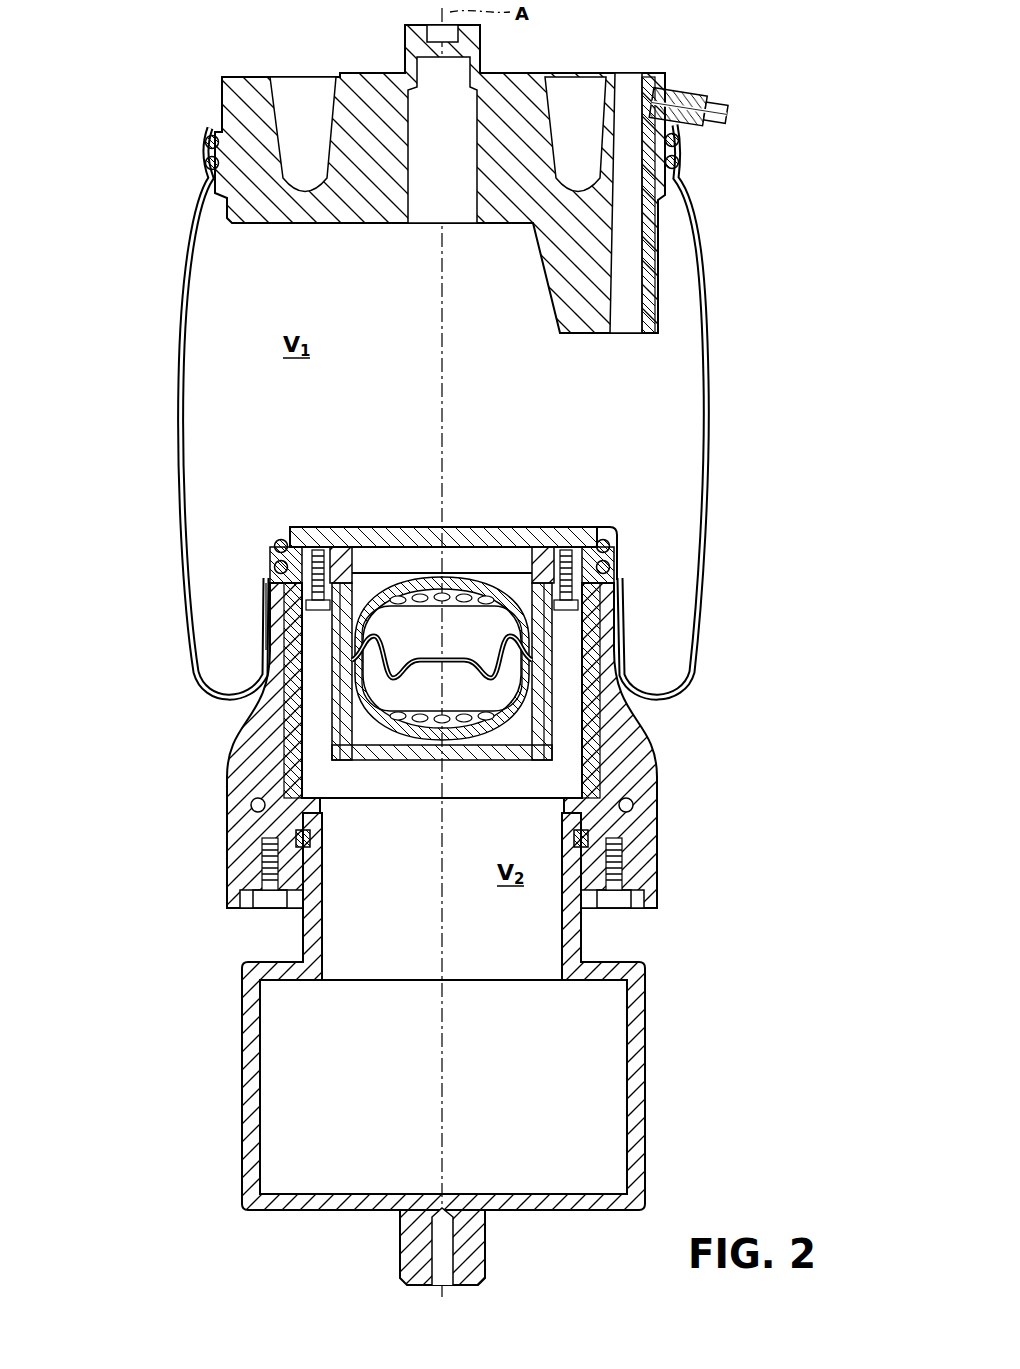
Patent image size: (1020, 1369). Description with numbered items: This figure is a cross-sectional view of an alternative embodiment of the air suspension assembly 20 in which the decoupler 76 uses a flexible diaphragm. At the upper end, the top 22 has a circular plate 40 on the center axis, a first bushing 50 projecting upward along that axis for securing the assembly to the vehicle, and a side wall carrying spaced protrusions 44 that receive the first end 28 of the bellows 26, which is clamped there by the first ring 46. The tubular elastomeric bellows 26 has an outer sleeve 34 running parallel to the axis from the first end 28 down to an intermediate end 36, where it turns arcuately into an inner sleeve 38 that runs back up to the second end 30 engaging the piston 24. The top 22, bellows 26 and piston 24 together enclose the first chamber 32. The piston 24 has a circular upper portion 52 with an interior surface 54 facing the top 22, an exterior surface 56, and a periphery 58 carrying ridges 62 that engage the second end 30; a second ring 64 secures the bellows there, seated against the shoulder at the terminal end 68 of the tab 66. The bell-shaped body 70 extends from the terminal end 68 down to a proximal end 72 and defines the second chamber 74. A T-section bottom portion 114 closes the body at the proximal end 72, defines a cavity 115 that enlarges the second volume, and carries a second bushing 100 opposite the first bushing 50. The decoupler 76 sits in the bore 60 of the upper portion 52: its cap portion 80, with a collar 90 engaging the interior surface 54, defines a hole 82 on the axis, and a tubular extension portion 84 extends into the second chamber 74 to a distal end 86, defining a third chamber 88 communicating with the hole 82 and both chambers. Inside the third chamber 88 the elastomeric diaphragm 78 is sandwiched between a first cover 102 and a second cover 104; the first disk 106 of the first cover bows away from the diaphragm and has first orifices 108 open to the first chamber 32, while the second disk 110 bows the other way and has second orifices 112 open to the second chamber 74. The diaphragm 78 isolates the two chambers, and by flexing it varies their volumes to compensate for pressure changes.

The air suspension assembly 20 is at (110, 122).
The top 22 is at (437, 166).
The piston 24 is at (431, 745).
The bellows 26 is at (487, 418).
The first end 28 is at (692, 122).
The second end 30 is at (598, 547).
The first chamber 32 is at (487, 418).
The outer sleeve 34 is at (707, 330).
The intermediate end 36 is at (487, 418).
The inner sleeve 38 is at (452, 745).
The plate 40 is at (650, 78).
The protrusions 44 is at (207, 138).
The first ring 46 is at (207, 165).
The first bushing 50 is at (412, 38).
The upper portion 52 is at (443, 509).
The interior surface 54 is at (580, 527).
The exterior surface 56 is at (476, 529).
The periphery 58 is at (318, 550).
The bore 60 is at (566, 550).
The ridges 62 is at (273, 548).
The second ring 64 is at (274, 568).
The tab 66 is at (610, 545).
The terminal end 68 is at (612, 566).
The body 70 is at (477, 745).
The proximal end 72 is at (625, 865).
The second chamber 74 is at (645, 793).
The decoupler 76 is at (352, 583).
The diaphragm 78 is at (423, 745).
The cap portion 80 is at (343, 560).
The hole 82 is at (544, 560).
The extension portion 84 is at (552, 690).
The distal end 86 is at (442, 689).
The third chamber 88 is at (457, 685).
The collar 90 is at (600, 598).
The second bushing 100 is at (485, 1278).
The first cover 102 is at (330, 640).
The second cover 104 is at (300, 700).
The first disk 106 is at (441, 629).
The first orifices 108 is at (441, 629).
The second disk 110 is at (492, 740).
The second orifices 112 is at (405, 738).
The bottom portion 114 is at (448, 1011).
The cavity 115 is at (275, 1098).